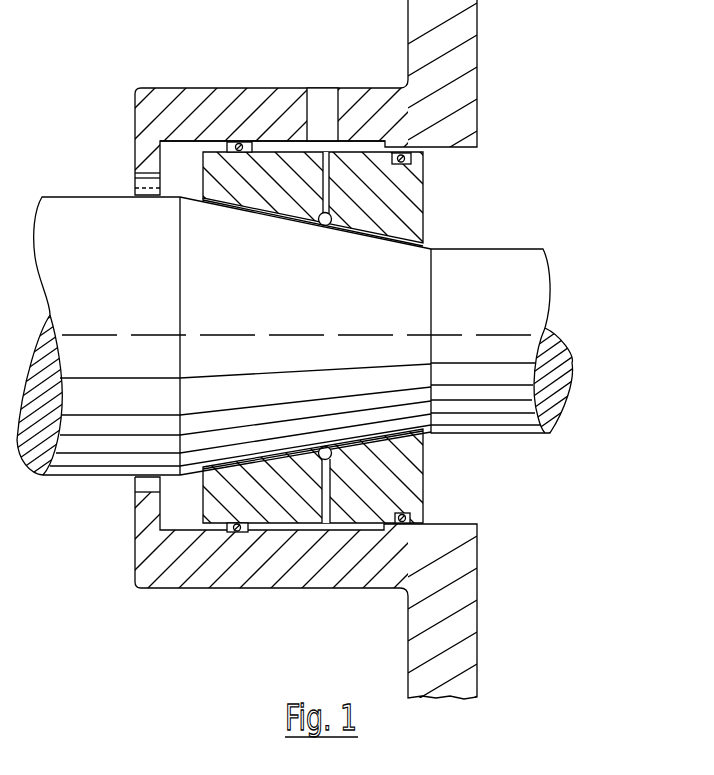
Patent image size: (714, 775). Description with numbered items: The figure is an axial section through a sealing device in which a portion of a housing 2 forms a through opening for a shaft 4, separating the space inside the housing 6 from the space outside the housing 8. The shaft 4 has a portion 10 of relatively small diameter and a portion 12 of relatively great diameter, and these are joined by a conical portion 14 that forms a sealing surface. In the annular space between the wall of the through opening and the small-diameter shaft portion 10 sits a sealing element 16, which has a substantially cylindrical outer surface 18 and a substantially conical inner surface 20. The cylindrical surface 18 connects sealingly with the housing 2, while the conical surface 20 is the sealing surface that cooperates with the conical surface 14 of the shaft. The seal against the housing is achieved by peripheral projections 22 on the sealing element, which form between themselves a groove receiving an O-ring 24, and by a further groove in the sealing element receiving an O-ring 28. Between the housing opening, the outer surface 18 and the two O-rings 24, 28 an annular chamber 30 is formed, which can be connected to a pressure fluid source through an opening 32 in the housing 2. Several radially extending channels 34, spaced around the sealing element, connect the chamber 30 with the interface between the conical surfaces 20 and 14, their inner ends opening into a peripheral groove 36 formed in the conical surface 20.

The housing 2 is at (475, 77).
The shaft 4 is at (503, 261).
The space inside the housing 6 is at (270, 44).
The space outside the housing 8 is at (611, 87).
The shaft portion having a relatively small diameter 10 is at (540, 303).
The shaft portion having a relatively great diameter 12 is at (70, 205).
The conical portion 14 is at (261, 319).
The sealing element 16 is at (421, 193).
The cylindrical outer surface 18 is at (362, 151).
The conical inner surface 20 is at (377, 238).
The peripheral projections 22 is at (238, 140).
The O-ring 24 is at (213, 201).
The O-ring 28 is at (412, 172).
The annular chamber 30 is at (267, 143).
The opening 32 is at (317, 88).
The channels 34 is at (336, 512).
The peripheral groove 36 is at (322, 227).